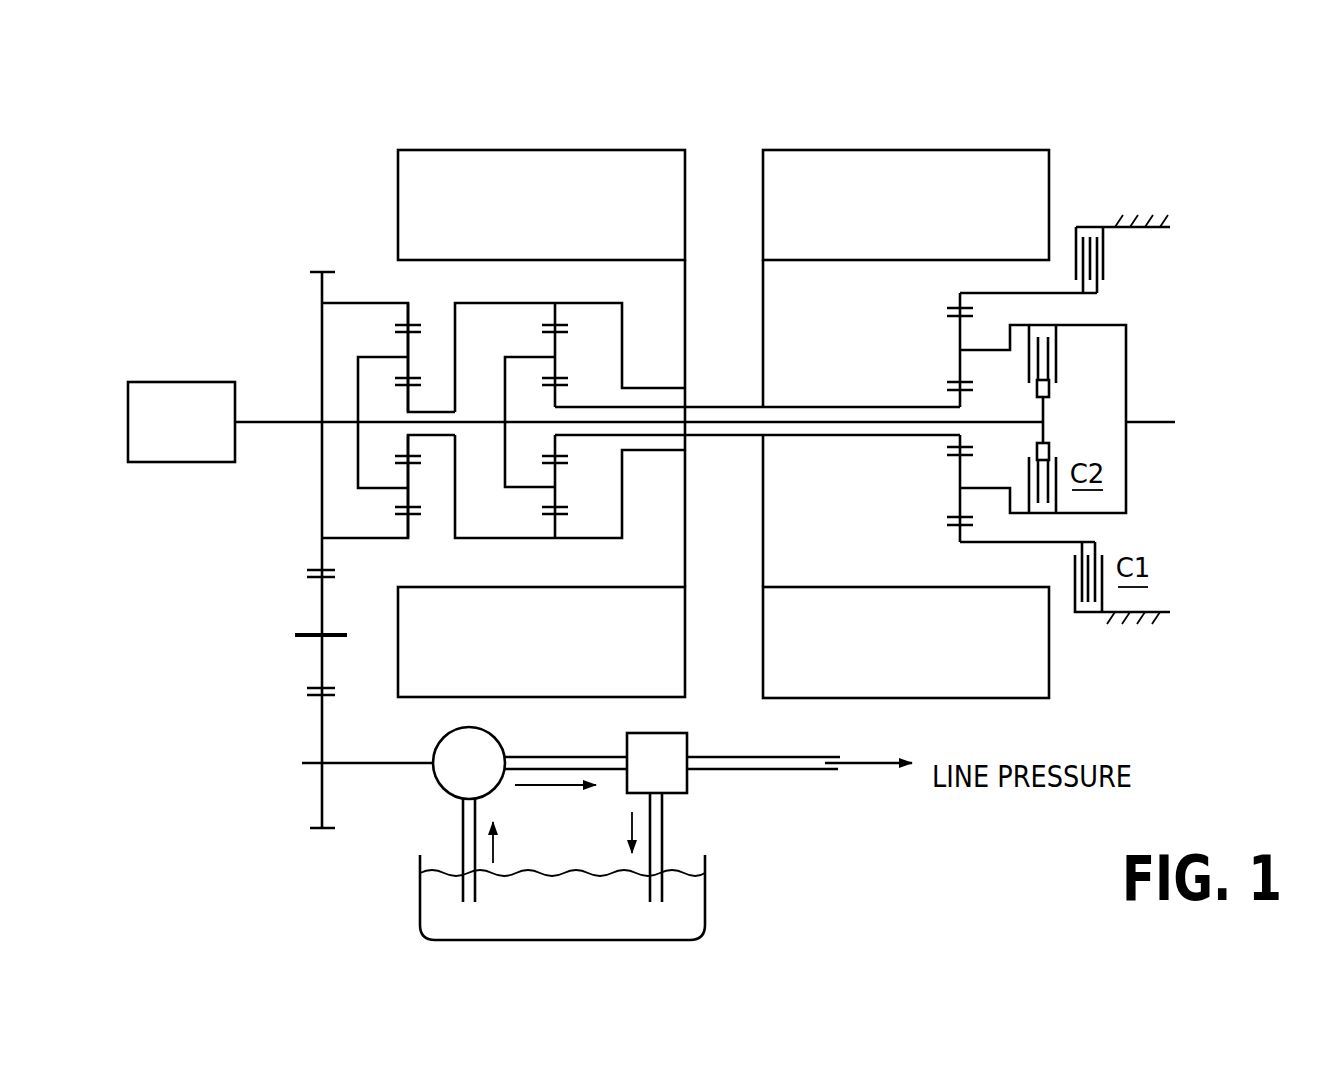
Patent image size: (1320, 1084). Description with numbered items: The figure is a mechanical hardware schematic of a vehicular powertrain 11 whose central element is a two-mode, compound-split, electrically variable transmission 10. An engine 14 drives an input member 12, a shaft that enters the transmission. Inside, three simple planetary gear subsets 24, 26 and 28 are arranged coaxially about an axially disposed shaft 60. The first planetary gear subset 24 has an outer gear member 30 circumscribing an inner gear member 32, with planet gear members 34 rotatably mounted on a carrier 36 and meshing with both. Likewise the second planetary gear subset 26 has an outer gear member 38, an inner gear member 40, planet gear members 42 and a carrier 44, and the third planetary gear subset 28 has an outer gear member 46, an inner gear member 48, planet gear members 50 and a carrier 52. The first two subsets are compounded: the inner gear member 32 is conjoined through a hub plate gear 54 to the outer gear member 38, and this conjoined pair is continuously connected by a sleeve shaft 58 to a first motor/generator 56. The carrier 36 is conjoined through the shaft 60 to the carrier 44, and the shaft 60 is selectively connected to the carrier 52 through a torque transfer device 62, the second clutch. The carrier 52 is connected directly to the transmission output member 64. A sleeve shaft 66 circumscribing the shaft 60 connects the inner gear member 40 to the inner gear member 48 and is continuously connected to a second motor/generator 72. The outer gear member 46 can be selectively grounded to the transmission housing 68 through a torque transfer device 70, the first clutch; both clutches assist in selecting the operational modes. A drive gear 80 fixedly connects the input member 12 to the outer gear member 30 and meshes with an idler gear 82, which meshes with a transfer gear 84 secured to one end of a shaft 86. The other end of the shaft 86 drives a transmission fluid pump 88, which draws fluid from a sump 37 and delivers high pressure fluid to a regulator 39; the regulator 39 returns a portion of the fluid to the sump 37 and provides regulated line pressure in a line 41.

The electrically variable transmission 10 is at (722, 132).
The vehicular powertrain 11 is at (255, 276).
The input member 12 is at (280, 420).
The engine 14 is at (167, 432).
The first planetary gear subset 24 is at (372, 293).
The second planetary gear subset 26 is at (578, 325).
The third planetary gear subset 28 is at (915, 330).
The outer gear member 30 is at (412, 322).
The inner gear member 32 is at (418, 386).
The planet gear members 34 is at (407, 348).
The carrier 36 is at (358, 457).
The outer gear member 38 is at (548, 326).
The inner gear member 40 is at (548, 456).
The planet gear members 42 is at (558, 371).
The carrier 44 is at (500, 468).
The outer gear member 46 is at (955, 303).
The inner gear member 48 is at (968, 447).
The planet gear members 50 is at (960, 382).
The carrier 52 is at (1100, 325).
The hub plate gear 54 is at (457, 342).
The first motor/generator 56 is at (525, 220).
The sleeve shaft 58 is at (655, 388).
The shaft 60 is at (720, 407).
The torque transfer device 62 is at (1057, 353).
The transmission output member 64 is at (1152, 420).
The sleeve shaft 66 is at (785, 405).
The transmission housing 68 is at (1152, 212).
The torque transfer device 70 is at (1105, 250).
The second motor/generator 72 is at (889, 220).
The drive gear 80 is at (322, 497).
The idler gear 82 is at (320, 655).
The transfer gear 84 is at (320, 735).
The shaft 86 is at (375, 785).
The transmission fluid pump 88 is at (485, 750).
The regulator 39 is at (690, 790).
The line 41 is at (832, 770).
The sump 37 is at (705, 905).